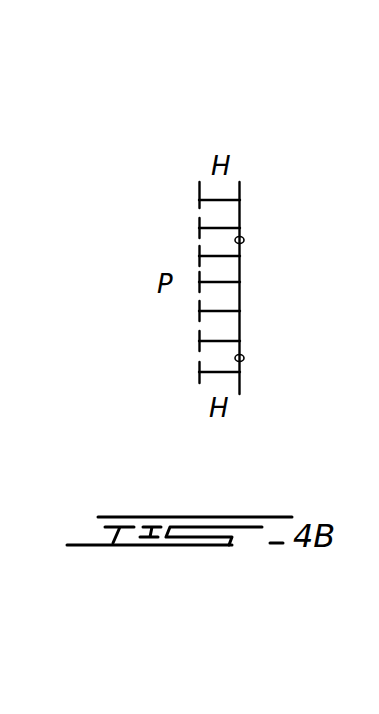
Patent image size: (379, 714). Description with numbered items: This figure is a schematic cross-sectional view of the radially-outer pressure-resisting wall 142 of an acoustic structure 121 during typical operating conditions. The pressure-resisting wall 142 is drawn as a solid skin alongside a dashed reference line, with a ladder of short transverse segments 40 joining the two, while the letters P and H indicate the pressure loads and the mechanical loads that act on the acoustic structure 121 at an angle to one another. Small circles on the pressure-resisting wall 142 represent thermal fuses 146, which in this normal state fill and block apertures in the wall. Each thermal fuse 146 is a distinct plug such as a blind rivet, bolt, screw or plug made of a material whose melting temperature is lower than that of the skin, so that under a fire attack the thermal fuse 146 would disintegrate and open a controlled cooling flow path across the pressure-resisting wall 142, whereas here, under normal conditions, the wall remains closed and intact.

The acoustic structure 121 is at (199, 185).
The pressure-resisting wall 142 is at (240, 210).
The rung segments 40 is at (199, 288).
The thermal fuse 146 is at (244, 358).